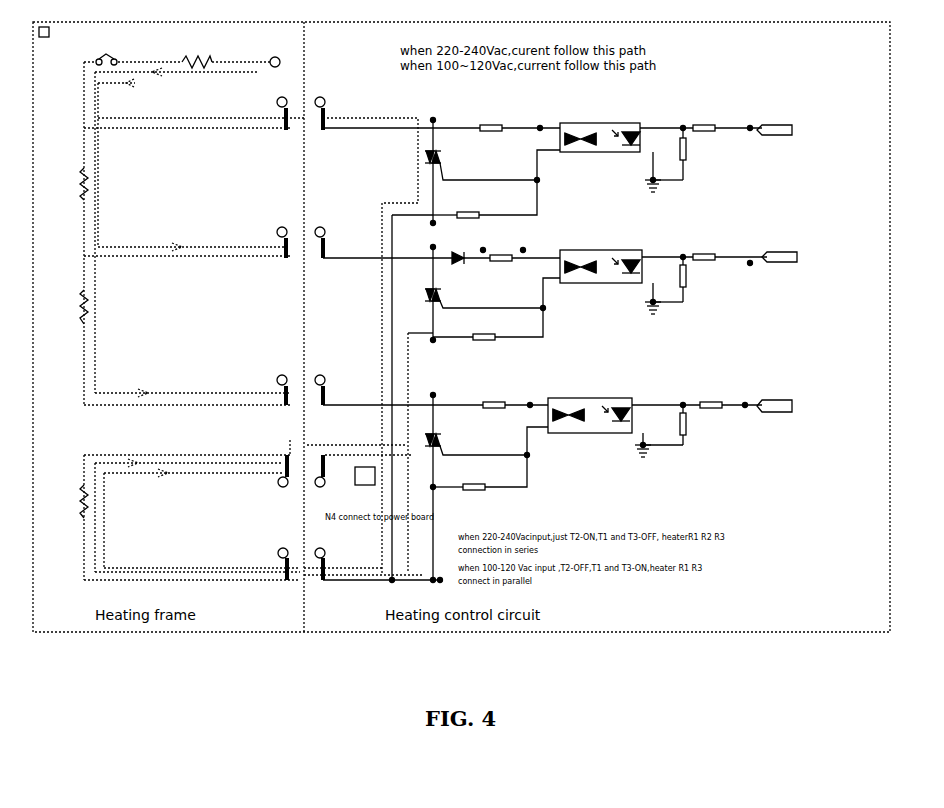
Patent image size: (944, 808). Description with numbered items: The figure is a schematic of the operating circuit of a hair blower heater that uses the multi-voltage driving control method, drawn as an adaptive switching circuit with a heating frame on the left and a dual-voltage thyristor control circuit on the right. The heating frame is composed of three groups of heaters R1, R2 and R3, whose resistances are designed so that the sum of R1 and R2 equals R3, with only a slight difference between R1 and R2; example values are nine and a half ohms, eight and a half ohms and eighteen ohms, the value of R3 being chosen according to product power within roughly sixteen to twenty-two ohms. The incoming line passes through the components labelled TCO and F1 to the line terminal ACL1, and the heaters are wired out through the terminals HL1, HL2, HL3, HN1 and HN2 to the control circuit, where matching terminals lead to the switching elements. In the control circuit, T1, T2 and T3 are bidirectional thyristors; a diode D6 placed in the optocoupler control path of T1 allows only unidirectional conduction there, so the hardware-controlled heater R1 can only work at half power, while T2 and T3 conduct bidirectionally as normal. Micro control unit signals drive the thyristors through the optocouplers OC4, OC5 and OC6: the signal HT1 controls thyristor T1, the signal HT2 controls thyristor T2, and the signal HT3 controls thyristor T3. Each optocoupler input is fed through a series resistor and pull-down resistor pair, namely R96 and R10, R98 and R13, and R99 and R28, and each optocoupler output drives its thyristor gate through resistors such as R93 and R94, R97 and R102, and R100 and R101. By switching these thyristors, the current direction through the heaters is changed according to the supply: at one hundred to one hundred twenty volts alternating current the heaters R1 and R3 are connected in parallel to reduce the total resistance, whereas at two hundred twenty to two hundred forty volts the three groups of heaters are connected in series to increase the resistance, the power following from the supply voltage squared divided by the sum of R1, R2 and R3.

The heater R1 is at (130, 181).
The heater R2 is at (130, 310).
The heater R3 is at (134, 506).
The thermal cut-off TCO is at (89, 54).
The thermal fuse F1 is at (178, 52).
The AC line terminal (blue) ACL1 is at (221, 66).
The heater terminal HL1 (yellow) HL1 is at (263, 106).
The heater terminal HL2 (brown) HL2 is at (292, 233).
The heater terminal HL3 (black) HL3 is at (292, 374).
The heater neutral terminal HN1 (red) HN1 is at (299, 474).
The heater neutral terminal HN2 (white) HN2 is at (287, 560).
The bidirectional thyristor T1 is at (492, 307).
The bidirectional thyristor T2 is at (486, 456).
The bidirectional thyristor T3 is at (492, 179).
The diode D6 is at (459, 256).
The optocoupler OC4 is at (621, 158).
The optocoupler OC5 is at (621, 283).
The optocoupler OC6 is at (615, 431).
The resistor R93 is at (498, 123).
The resistor R94 is at (467, 215).
The resistor R96 is at (722, 126).
The resistor R10 is at (691, 154).
The resistor R97 is at (515, 257).
The resistor R98 is at (725, 256).
The resistor R13 is at (691, 280).
The resistor R102 is at (474, 337).
The resistor R100 is at (501, 405).
The resistor R101 is at (468, 487).
The resistor R99 is at (722, 404).
The resistor R28 is at (686, 428).
The MCU control signal HT1 is at (771, 248).
The MCU control signal HT2 is at (768, 397).
The MCU control signal HT3 is at (766, 120).